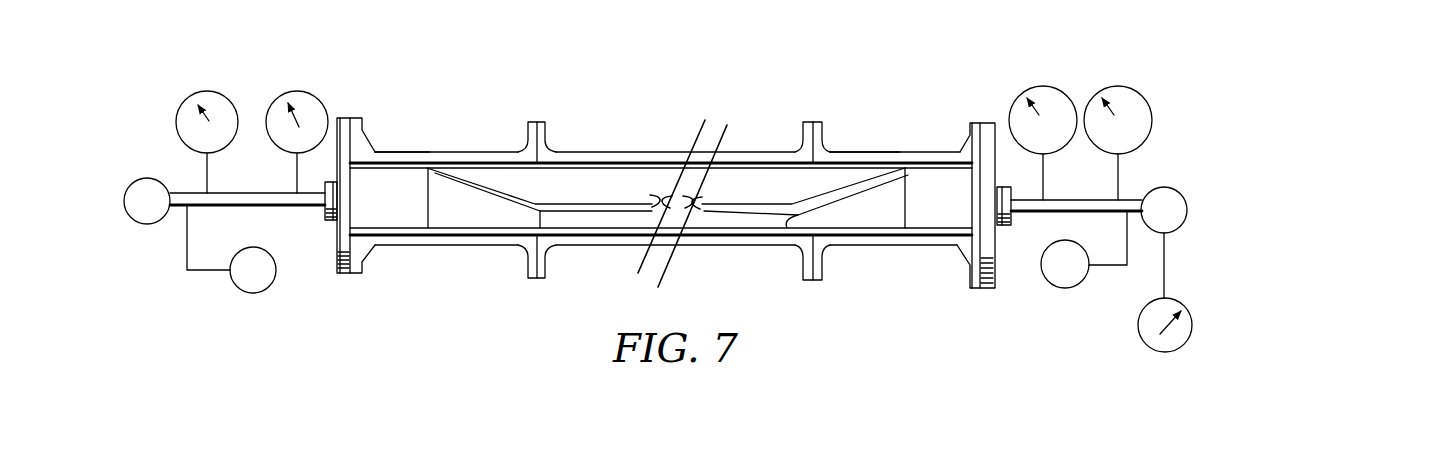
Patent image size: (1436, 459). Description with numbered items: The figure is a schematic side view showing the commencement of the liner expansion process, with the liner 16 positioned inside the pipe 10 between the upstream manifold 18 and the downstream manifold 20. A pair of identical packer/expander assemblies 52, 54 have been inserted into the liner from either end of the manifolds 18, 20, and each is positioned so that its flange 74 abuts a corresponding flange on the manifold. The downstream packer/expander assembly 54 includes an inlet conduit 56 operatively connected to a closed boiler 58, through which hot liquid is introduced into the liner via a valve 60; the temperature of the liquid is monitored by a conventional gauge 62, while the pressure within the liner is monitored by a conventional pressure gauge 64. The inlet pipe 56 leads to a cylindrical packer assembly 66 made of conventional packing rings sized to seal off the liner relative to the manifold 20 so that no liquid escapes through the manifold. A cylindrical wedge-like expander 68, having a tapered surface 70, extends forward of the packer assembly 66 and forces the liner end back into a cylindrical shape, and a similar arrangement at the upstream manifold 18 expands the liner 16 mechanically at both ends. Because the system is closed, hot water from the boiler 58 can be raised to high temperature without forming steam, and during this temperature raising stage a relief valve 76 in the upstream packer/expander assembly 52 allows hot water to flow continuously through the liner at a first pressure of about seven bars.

The pipe 10 is at (613, 158).
The liner 16 is at (588, 202).
The upstream manifold 18 is at (398, 153).
The downstream manifold 20 is at (858, 160).
The packer/expander assembly 52 is at (328, 224).
The packer/expander assembly 54 is at (1006, 240).
The inlet conduit 56 is at (216, 193).
The closed boiler 58 is at (1193, 322).
The valve 60 is at (142, 178).
The temperature gauge 62 is at (203, 92).
The pressure gauge 64 is at (313, 95).
The packer assembly 66 is at (390, 220).
The expander 68 is at (472, 223).
The tapered surface 70 is at (840, 200).
The flange 74 is at (343, 273).
The relief valve 76 is at (253, 293).